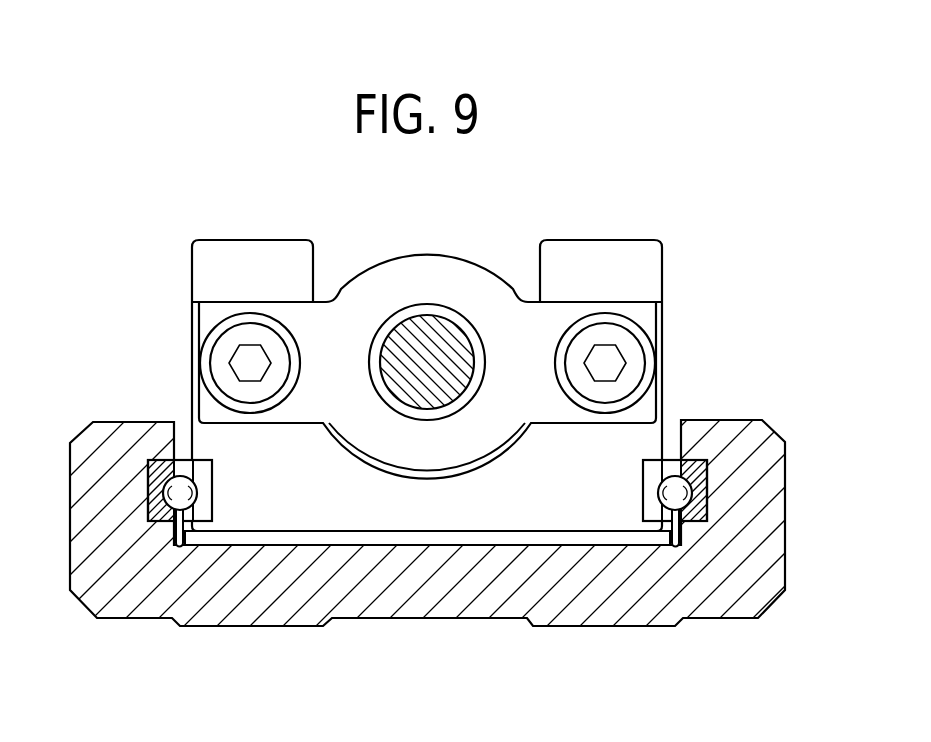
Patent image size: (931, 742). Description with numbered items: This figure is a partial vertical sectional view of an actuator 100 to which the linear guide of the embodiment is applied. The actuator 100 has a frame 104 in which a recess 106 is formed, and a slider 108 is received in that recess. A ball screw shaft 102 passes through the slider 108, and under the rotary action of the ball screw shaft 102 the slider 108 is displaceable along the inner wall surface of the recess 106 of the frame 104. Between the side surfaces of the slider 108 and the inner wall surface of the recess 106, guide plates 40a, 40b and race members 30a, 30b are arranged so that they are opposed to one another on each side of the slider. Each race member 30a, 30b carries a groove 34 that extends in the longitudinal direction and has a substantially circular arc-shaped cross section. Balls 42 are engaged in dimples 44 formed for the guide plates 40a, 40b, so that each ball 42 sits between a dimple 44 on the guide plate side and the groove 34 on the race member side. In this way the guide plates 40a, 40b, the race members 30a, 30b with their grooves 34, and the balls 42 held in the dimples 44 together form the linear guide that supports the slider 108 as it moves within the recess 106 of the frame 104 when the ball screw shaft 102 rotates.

The actuator 100 is at (656, 154).
The ball screw shaft 102 is at (424, 348).
The frame 104 is at (366, 628).
The recess 106 is at (276, 543).
The slider 108 is at (598, 236).
The race member 30a is at (204, 472).
The race member 30b is at (651, 472).
The groove 34 is at (193, 505).
The guide plate 40a is at (173, 459).
The guide plate 40b is at (682, 459).
The ball 42 is at (180, 546).
The dimple 44 is at (149, 507).